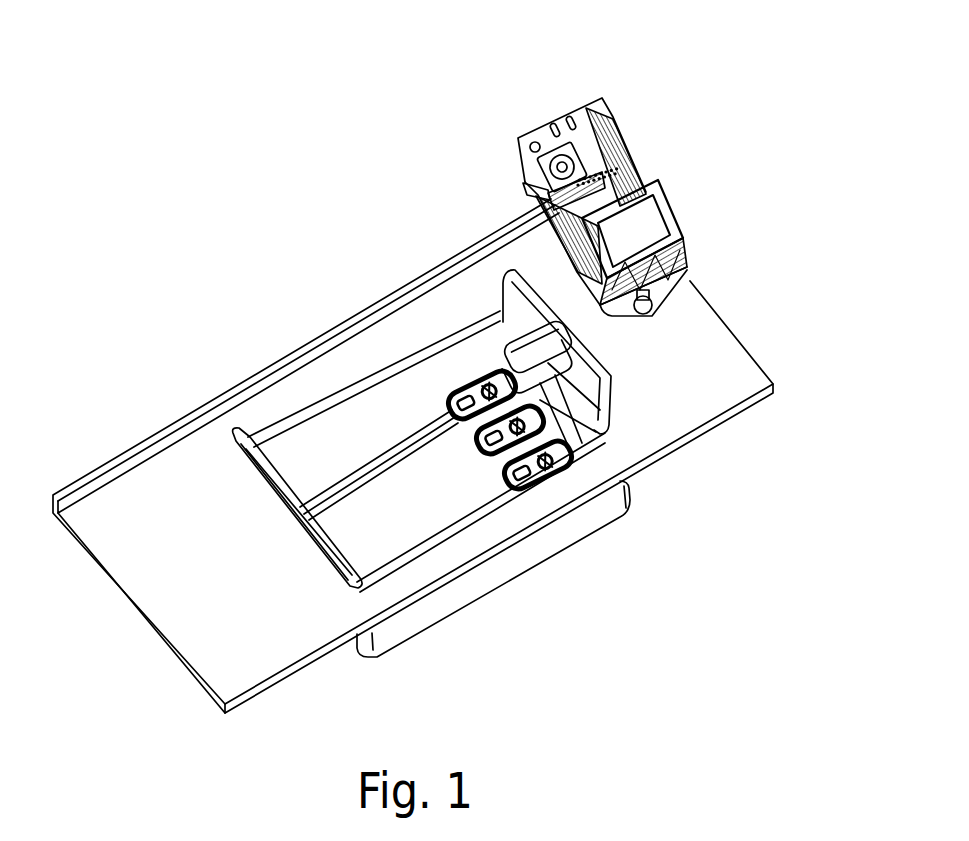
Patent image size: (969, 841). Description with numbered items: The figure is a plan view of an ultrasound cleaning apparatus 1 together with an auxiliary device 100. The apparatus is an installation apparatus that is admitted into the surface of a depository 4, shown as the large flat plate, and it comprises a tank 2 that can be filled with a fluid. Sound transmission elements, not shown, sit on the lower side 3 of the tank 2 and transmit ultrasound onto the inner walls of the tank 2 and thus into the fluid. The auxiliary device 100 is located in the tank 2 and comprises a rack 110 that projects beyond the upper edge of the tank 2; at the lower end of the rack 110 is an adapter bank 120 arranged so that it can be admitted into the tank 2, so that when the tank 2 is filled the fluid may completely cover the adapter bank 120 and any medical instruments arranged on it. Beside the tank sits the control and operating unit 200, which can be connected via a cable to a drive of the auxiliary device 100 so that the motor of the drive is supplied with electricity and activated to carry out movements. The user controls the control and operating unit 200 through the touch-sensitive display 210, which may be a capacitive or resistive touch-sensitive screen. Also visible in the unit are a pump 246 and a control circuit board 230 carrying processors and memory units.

The ultrasound cleaning apparatus 1 is at (240, 360).
The tank 2 is at (399, 398).
The lower side of the tank 3 is at (479, 610).
The depository 4 is at (174, 530).
The auxiliary device 100 is at (612, 353).
The rack 110 is at (614, 378).
The adapter bank 120 is at (468, 457).
The control and/or operating unit 200 is at (522, 112).
The touch-sensitive display 210 is at (643, 222).
The control circuit board 230 is at (612, 114).
The pump 246 is at (527, 178).